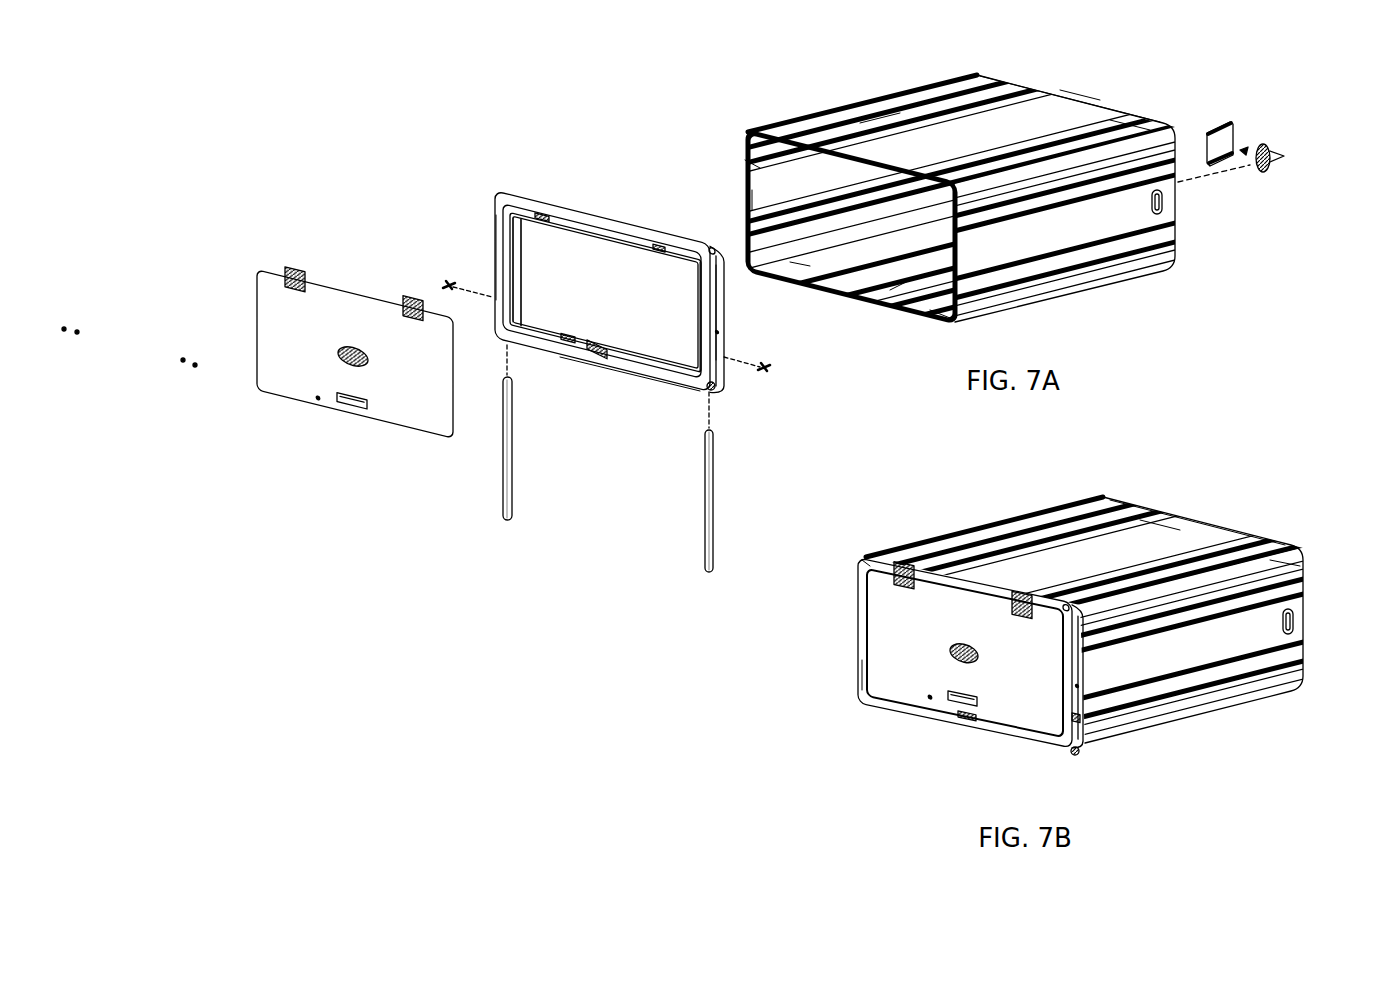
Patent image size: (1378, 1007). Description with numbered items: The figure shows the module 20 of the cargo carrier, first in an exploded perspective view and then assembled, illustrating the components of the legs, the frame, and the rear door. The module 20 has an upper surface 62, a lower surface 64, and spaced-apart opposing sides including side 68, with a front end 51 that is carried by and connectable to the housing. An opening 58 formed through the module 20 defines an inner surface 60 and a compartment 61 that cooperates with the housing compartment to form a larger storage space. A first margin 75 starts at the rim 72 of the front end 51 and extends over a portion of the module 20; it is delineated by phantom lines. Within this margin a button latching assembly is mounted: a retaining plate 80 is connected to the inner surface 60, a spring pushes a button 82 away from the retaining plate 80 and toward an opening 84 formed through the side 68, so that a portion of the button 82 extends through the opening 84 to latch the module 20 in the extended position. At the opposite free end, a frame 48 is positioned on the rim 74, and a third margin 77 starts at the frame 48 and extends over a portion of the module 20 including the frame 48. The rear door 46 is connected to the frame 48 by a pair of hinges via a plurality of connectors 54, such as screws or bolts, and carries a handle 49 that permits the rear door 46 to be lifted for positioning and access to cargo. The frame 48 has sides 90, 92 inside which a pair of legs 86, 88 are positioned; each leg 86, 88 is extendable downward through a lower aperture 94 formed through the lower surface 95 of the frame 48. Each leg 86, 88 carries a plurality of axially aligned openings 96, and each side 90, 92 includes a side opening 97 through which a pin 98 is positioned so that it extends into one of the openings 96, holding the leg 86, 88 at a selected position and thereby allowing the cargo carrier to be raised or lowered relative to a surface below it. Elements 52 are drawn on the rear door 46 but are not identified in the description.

In FIG. 7A, the module 20 is at (1093, 285).
In FIG. 7B, the module 20 is at (1042, 518).
In FIG. 7A, the rear door 46 is at (270, 337).
In FIG. 7B, the rear door 46 is at (880, 647).
In FIG. 7A, the frame 48 is at (500, 195).
In FIG. 7B, the frame 48 is at (1082, 677).
In FIG. 7A, the handle 49 is at (348, 410).
In FIG. 7B, the handle 49 is at (950, 697).
In FIG. 7A, the front end 51 is at (1090, 103).
In FIG. 7B, the front end 51 is at (1163, 510).
In FIG. 7A, the clips 52 is at (412, 298).
In FIG. 7A, the connectors 54 is at (195, 373).
In FIG. 7A, the opening 58 is at (763, 197).
In FIG. 7A, the inner surface 60 is at (938, 313).
In FIG. 7A, the compartment 61 is at (793, 270).
In FIG. 7A, the upper surface 62 is at (878, 113).
In FIG. 7A, the lower surface 64 is at (897, 293).
In FIG. 7A, the side 68 is at (1246, 152).
In FIG. 7A, the rim 72 is at (1037, 83).
In FIG. 7B, the rim 72 is at (1270, 537).
In FIG. 7A, the rim 74 is at (743, 168).
In FIG. 7A, the first margin 75 is at (1130, 120).
In FIG. 7B, the first margin 75 is at (1288, 560).
In FIG. 7B, the third margin 77 is at (868, 558).
In FIG. 7A, the retaining plate 80 is at (1232, 120).
In FIG. 7A, the button 82 is at (1270, 170).
In FIG. 7B, the button 82 is at (1297, 623).
In FIG. 7A, the opening 84 is at (1165, 204).
In FIG. 7A, the leg 86 is at (713, 552).
In FIG. 7B, the leg 86 is at (1075, 752).
In FIG. 7A, the leg 88 is at (513, 503).
In FIG. 7B, the leg 88 is at (868, 702).
In FIG. 7A, the side 90 is at (493, 230).
In FIG. 7A, the side 92 is at (718, 300).
In FIG. 7A, the lower aperture 94 is at (714, 389).
In FIG. 7A, the lower surface 95 is at (637, 378).
In FIG. 7A, the openings 96 is at (512, 388).
In FIG. 7A, the side opening 97 is at (512, 302).
In FIG. 7A, the pin 98 is at (452, 283).